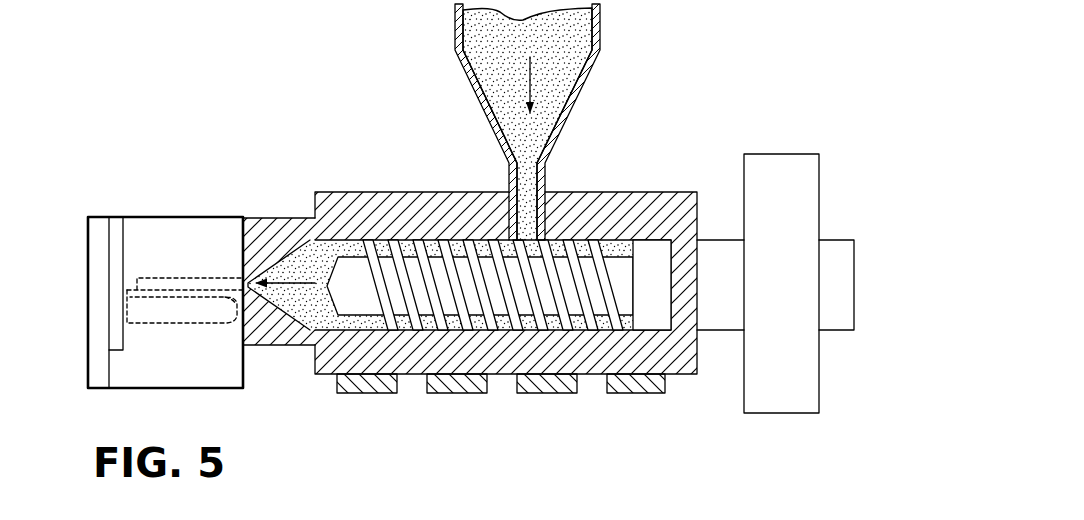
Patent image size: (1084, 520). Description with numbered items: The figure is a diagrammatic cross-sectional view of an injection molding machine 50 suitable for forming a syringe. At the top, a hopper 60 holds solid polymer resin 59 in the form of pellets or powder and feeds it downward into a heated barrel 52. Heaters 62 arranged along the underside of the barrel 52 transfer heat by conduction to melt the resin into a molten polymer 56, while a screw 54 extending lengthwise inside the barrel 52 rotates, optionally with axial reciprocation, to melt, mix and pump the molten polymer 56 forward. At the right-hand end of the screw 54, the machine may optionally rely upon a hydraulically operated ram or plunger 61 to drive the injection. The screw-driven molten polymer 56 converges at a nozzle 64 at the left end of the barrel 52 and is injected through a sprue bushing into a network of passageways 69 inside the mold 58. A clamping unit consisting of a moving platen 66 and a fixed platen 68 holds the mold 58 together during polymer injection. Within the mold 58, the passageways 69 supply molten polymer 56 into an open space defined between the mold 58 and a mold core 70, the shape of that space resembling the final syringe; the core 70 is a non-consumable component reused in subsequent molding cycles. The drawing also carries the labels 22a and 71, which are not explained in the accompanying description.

The molded component 22a is at (273, 0).
The injection molding machine 50 is at (548, 234).
The heated barrel 52 is at (697, 356).
The screw 54 is at (604, 268).
The molten polymer 56 is at (329, 313).
The mold 58 is at (174, 291).
The solid polymer resin 59 is at (566, 46).
The hopper 60 is at (462, 65).
The hydraulically operated ram or plunger 61 is at (730, 238).
The heaters 62 is at (460, 393).
The nozzle 64 is at (248, 280).
The moving platen 66 is at (94, 217).
The fixed platen 68 is at (200, 217).
The network of passageways 69 is at (178, 278).
The mold core 70 is at (172, 324).
The mold insert plate 71 is at (116, 217).